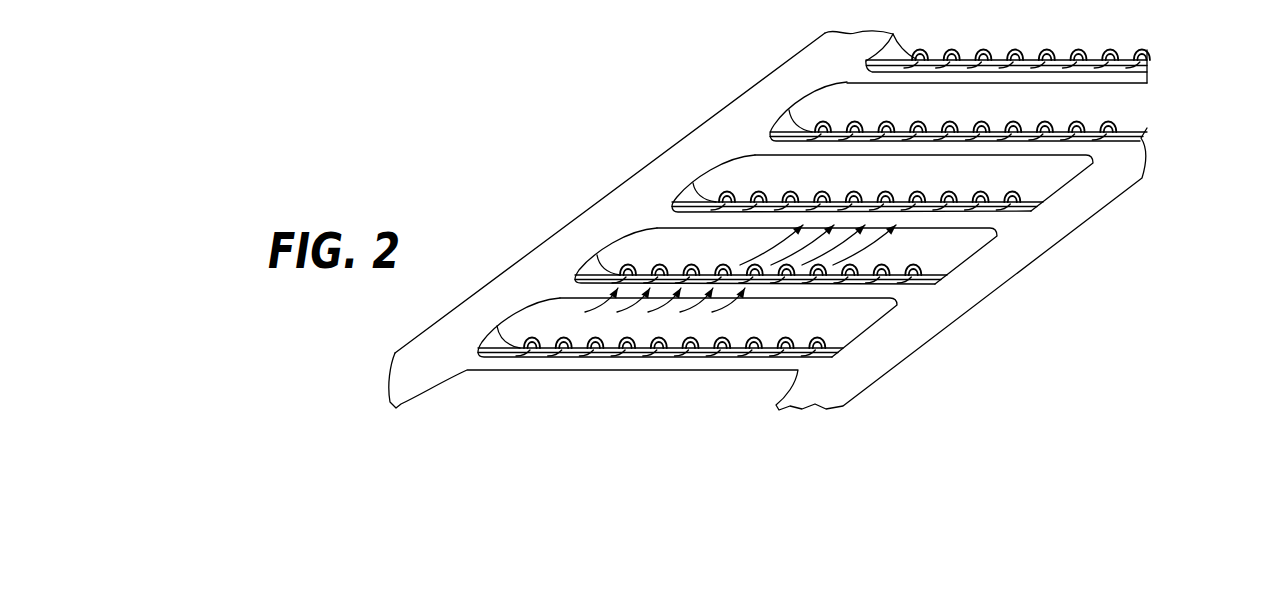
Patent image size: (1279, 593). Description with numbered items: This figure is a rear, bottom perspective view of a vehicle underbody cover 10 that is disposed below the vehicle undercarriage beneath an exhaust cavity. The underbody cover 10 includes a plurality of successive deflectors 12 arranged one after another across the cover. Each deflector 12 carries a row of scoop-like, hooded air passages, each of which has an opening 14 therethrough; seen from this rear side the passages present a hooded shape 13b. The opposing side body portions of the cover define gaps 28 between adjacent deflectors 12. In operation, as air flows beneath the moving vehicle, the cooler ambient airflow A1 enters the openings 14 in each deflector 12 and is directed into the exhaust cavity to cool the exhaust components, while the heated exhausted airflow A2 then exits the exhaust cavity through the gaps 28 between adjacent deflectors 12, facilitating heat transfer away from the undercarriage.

The underbody cover 10 is at (980, 365).
The deflector 12 is at (783, 130).
The hooded shape 13b is at (983, 53).
The opening 14 is at (913, 280).
The gap 28 is at (1058, 172).
The ambient airflow A1 is at (666, 312).
The heated exhausted airflow A2 is at (830, 243).